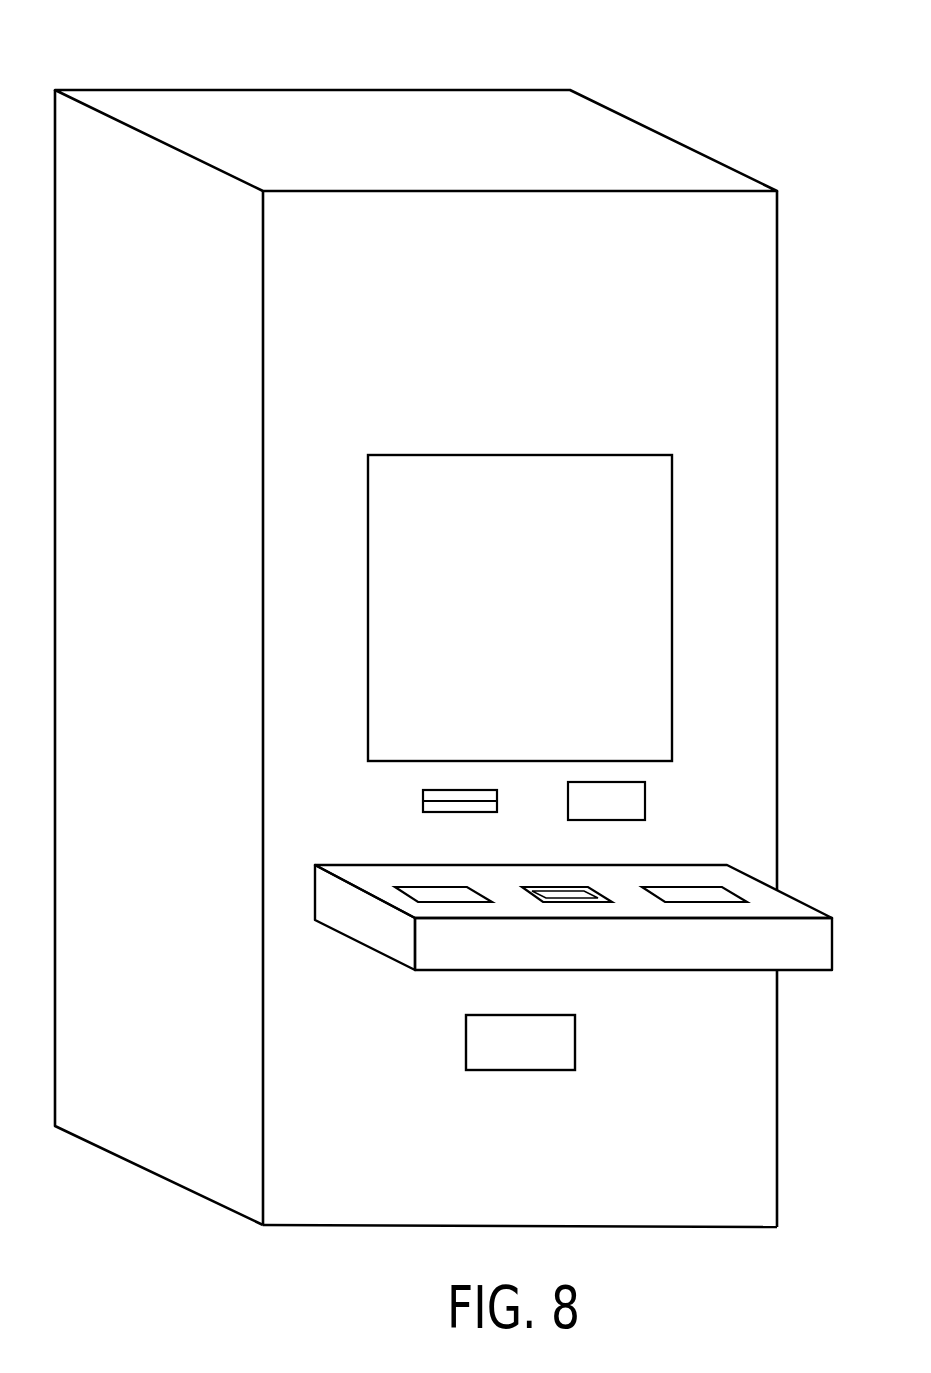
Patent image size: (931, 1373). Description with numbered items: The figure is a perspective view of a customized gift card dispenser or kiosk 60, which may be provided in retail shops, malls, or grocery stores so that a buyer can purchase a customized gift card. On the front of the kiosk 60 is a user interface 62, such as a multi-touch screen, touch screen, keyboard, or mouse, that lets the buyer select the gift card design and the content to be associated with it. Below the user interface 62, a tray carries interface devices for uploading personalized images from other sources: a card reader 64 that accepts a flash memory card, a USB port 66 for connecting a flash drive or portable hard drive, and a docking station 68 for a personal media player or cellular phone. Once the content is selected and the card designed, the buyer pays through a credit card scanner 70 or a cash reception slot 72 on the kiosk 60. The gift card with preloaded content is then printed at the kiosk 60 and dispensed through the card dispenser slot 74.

The kiosk 60 is at (760, 82).
The user interface 62 is at (673, 612).
The card reader 64 is at (407, 890).
The USB port 66 is at (553, 887).
The docking station 68 is at (707, 902).
The credit card scanner 70 is at (423, 802).
The cash reception slot 72 is at (645, 805).
The card dispenser slot 74 is at (575, 1042).